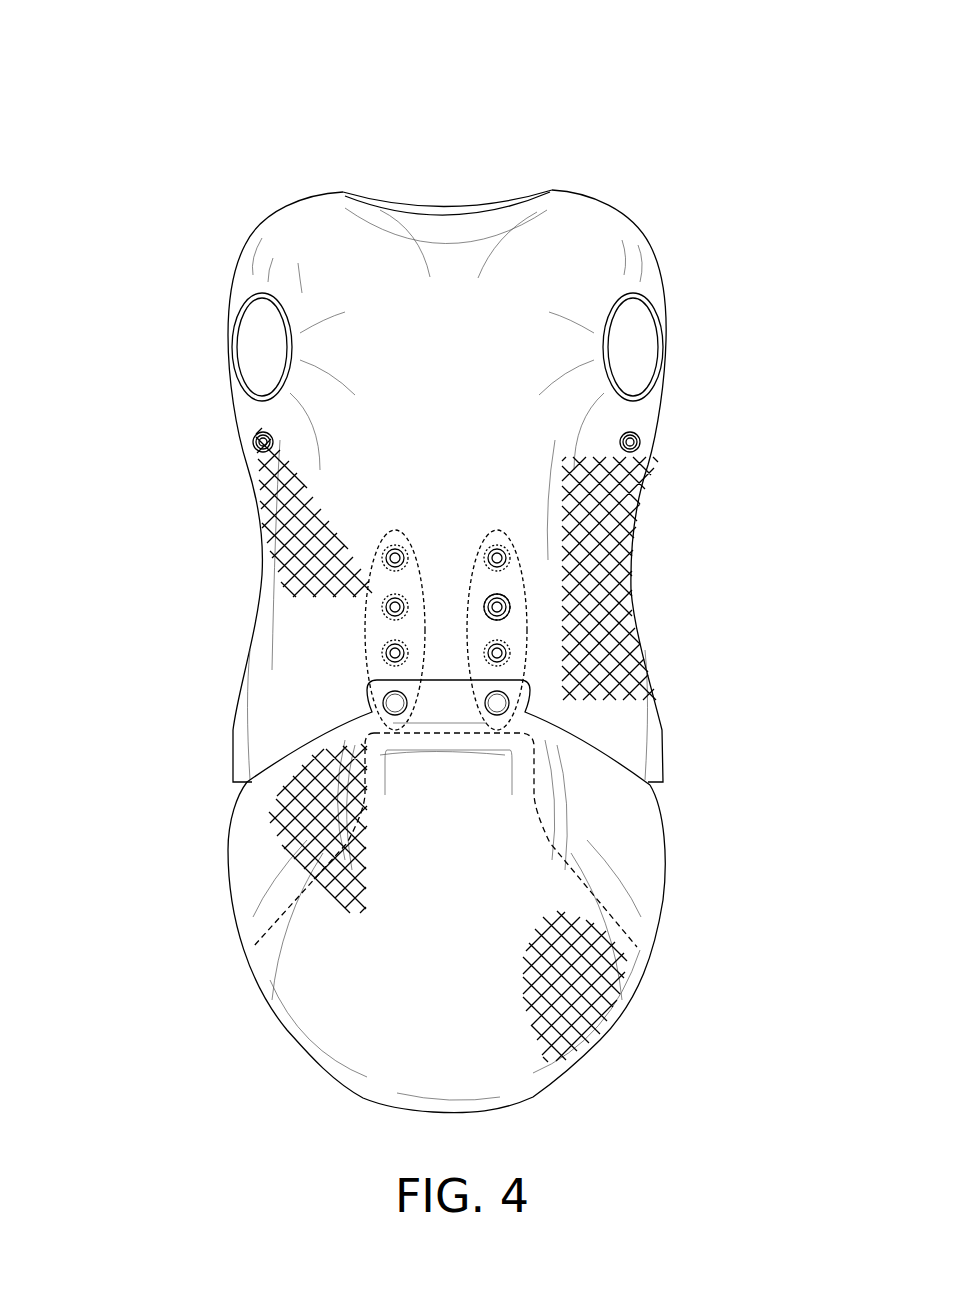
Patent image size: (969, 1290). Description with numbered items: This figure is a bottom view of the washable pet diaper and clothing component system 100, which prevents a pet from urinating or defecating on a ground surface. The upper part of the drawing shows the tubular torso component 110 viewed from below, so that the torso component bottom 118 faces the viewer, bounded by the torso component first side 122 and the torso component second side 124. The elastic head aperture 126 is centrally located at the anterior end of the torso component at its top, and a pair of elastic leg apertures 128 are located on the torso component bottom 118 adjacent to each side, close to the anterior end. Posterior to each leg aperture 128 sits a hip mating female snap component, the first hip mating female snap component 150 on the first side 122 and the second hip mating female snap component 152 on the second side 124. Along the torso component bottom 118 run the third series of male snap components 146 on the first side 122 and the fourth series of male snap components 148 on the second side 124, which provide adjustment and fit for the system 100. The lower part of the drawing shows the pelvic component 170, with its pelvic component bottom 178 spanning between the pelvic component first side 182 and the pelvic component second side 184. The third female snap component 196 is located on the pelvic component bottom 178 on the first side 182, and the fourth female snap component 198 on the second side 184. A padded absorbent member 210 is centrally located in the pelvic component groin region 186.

The washable pet diaper and clothing component system 100 is at (136, 102).
The tubular torso component 110 is at (225, 240).
The elastic head aperture 126 is at (420, 210).
The third series of male snap components 146 is at (514, 519).
The elastic leg aperture 128 is at (240, 346).
The second hip mating female snap component 152 is at (256, 444).
The first hip mating female snap component 150 is at (640, 441).
The torso component second side 124 is at (315, 577).
The torso component bottom 118 is at (537, 600).
The torso component first side 122 is at (600, 647).
The fourth series of male snap components 148 is at (337, 624).
The fourth female snap component 198 is at (390, 703).
The third female snap component 196 is at (502, 703).
The pelvic component 170 is at (208, 882).
The padded absorbent member 210 is at (437, 818).
The pelvic component groin region 186 is at (452, 912).
The pelvic component first side 182 is at (570, 972).
The pelvic component second side 184 is at (383, 1027).
The pelvic component bottom 178 is at (467, 1010).